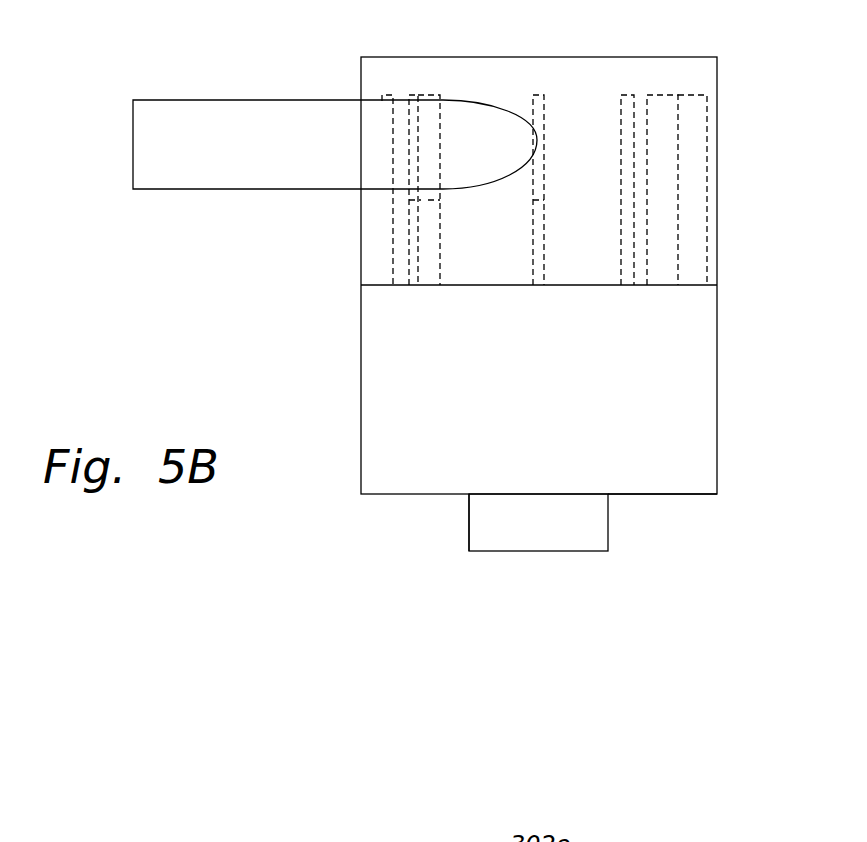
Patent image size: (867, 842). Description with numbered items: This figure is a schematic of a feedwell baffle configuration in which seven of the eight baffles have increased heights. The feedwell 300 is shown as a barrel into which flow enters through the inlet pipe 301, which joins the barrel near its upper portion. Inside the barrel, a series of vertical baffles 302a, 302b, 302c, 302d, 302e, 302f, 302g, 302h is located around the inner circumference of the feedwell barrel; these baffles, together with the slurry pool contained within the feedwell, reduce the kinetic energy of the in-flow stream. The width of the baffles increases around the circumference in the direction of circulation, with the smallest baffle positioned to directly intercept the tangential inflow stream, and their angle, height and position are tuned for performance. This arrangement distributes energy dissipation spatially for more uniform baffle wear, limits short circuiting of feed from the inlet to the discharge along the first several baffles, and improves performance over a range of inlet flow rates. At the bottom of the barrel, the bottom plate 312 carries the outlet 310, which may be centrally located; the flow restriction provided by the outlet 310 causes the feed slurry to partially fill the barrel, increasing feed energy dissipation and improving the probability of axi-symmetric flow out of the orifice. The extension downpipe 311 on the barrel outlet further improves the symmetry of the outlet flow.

The feedwell 300 is at (717, 122).
The inlet pipe 301 is at (196, 99).
The baffle #1 302a is at (541, 268).
The baffle #2 302b is at (638, 96).
The baffle #3 302c is at (695, 96).
The baffle #4 302d is at (661, 96).
The baffle #5 302e is at (538, 94).
The baffle #6 302f is at (433, 96).
The baffle #7 302g is at (382, 96).
The baffle #8 302h is at (429, 268).
The outlet 310 is at (541, 551).
The extension downpipe 311 is at (469, 530).
The bottom plate 312 is at (692, 497).